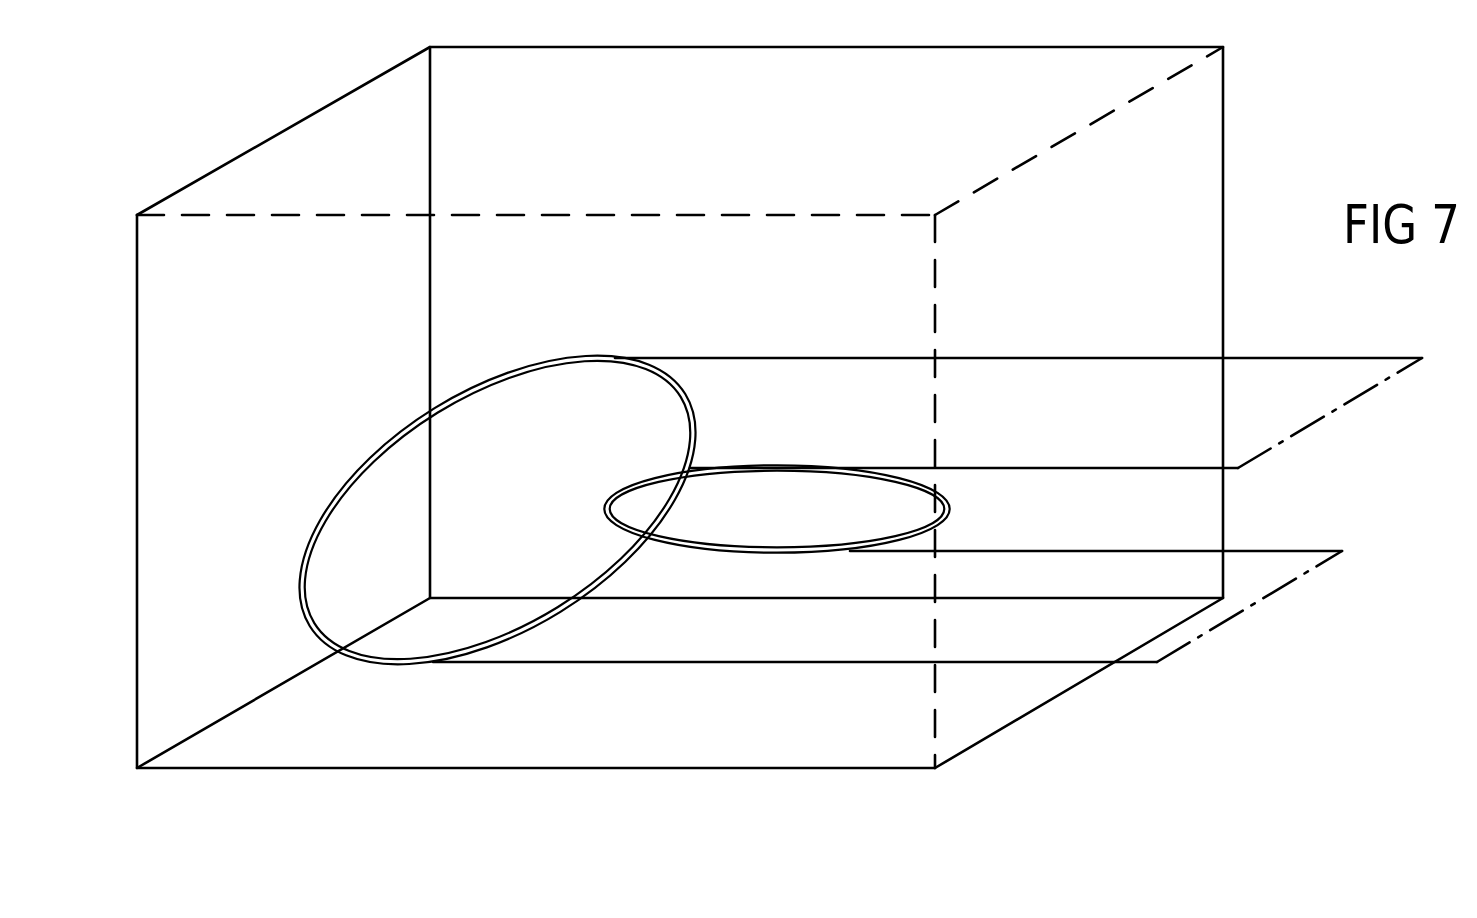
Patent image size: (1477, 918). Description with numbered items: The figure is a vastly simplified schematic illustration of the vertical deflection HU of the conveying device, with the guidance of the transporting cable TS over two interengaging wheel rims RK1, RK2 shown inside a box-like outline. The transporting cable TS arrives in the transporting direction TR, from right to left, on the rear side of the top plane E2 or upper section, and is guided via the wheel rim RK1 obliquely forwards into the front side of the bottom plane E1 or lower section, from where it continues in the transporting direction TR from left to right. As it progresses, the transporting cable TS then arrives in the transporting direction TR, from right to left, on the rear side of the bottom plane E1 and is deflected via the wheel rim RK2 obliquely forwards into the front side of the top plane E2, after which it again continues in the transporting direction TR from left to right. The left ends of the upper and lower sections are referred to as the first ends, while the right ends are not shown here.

The vertical deflection HU is at (1257, 113).
The bottom plane E1 is at (1222, 622).
The top plane E2 is at (1303, 430).
The wheel rim RK1 is at (377, 450).
The wheel rim RK2 is at (766, 468).
The transporting direction TR is at (1078, 330).
The transporting cable TS is at (822, 705).